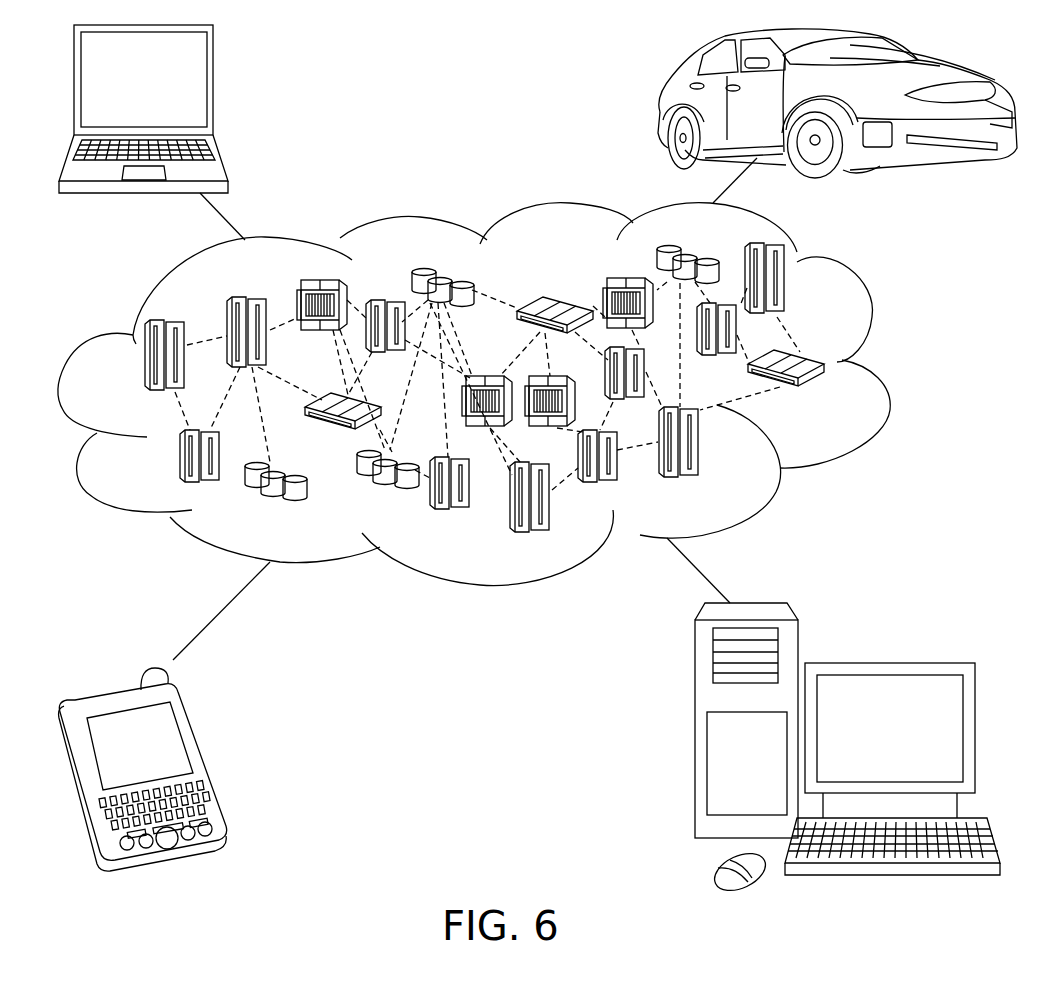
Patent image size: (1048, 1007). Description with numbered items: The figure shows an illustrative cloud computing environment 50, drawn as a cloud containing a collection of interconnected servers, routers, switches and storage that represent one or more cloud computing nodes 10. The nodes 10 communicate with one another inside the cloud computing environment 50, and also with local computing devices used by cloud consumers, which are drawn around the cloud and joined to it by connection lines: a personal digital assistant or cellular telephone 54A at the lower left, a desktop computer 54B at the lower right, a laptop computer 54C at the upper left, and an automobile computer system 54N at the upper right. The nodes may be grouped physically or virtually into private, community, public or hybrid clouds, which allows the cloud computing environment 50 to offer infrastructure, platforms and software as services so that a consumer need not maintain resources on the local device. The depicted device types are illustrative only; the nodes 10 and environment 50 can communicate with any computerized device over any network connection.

The cloud computing node 10 is at (830, 400).
The cloud computing environment 50 is at (885, 371).
The personal digital assistant or cellular telephone 54A is at (205, 758).
The desktop computer 54B is at (887, 663).
The laptop computer 54C is at (213, 88).
The automobile computer system 54N is at (662, 102).